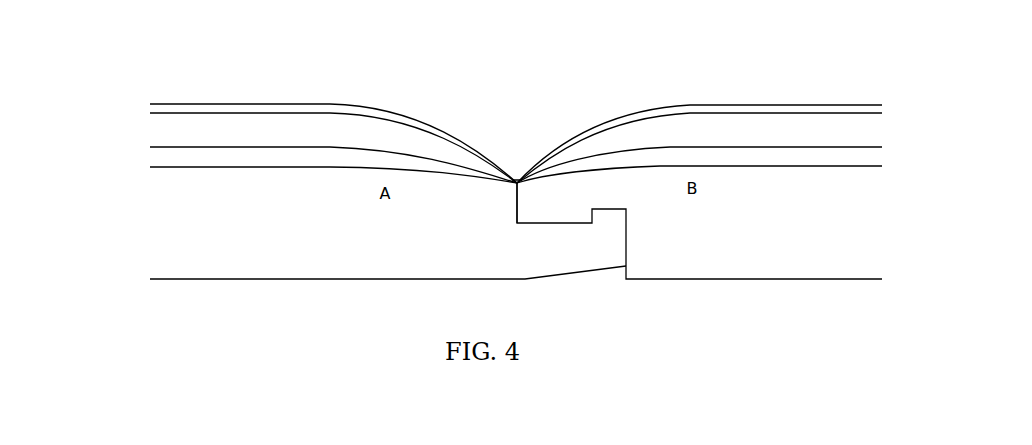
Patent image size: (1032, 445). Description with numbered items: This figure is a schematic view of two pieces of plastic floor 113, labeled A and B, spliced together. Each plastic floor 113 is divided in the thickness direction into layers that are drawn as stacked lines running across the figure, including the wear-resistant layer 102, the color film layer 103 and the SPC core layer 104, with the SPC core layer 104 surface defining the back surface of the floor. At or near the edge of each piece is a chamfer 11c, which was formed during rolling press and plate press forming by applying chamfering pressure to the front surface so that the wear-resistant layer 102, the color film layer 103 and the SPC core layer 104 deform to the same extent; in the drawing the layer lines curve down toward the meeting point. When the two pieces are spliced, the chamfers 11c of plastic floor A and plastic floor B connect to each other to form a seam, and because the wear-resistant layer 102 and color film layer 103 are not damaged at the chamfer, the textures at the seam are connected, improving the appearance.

The plastic floor 113 is at (128, 206).
The chamfer 11c is at (489, 158).
The wear-resistant layer 102 is at (587, 143).
The color film layer 103 is at (628, 160).
The SPC core layer 104 is at (718, 183).